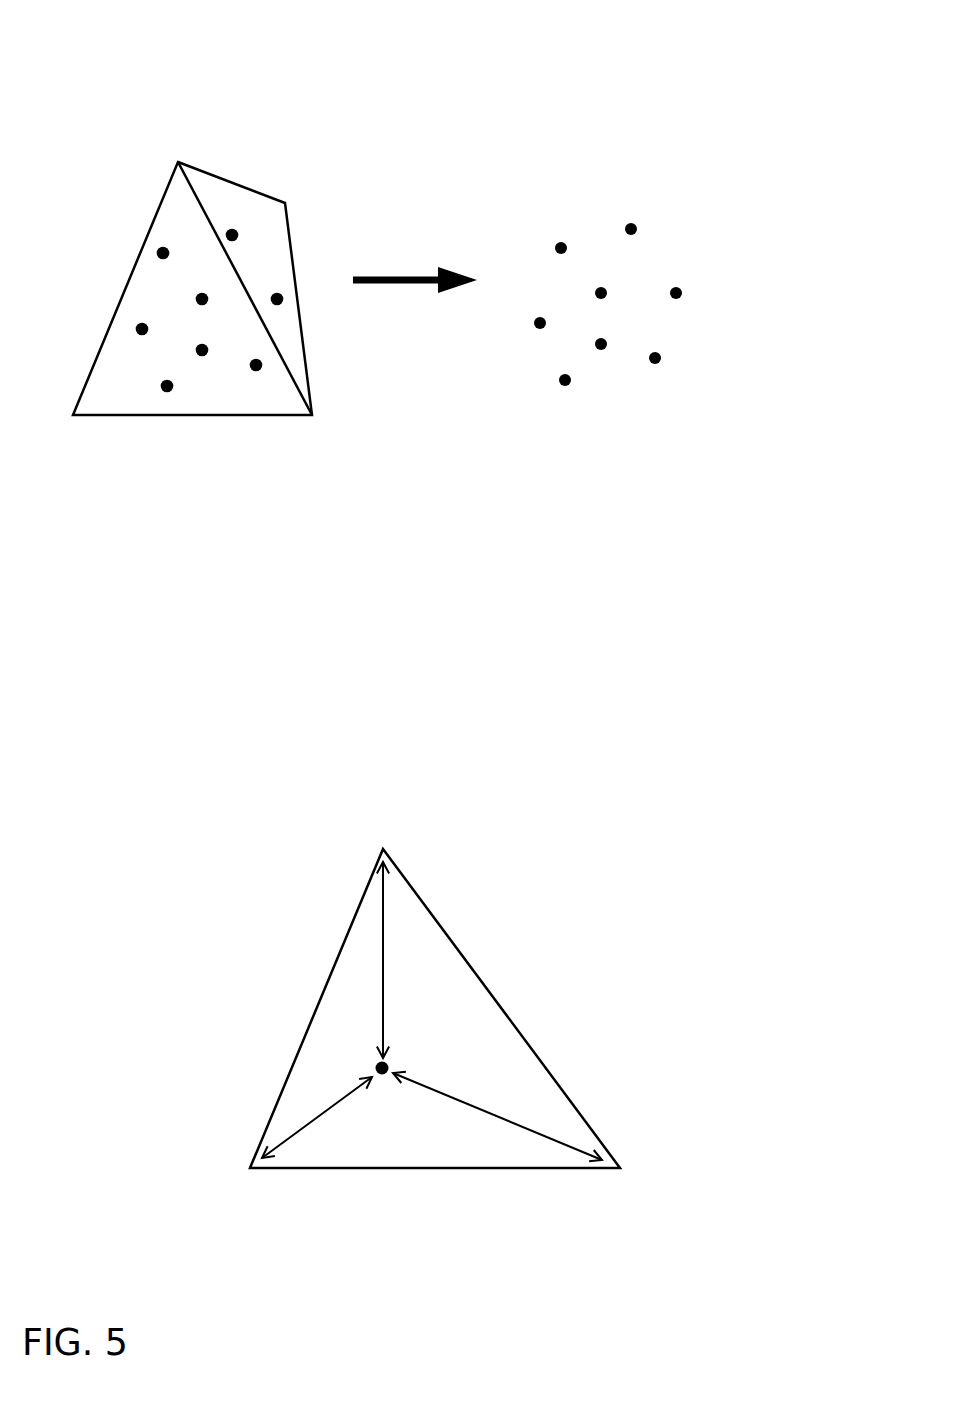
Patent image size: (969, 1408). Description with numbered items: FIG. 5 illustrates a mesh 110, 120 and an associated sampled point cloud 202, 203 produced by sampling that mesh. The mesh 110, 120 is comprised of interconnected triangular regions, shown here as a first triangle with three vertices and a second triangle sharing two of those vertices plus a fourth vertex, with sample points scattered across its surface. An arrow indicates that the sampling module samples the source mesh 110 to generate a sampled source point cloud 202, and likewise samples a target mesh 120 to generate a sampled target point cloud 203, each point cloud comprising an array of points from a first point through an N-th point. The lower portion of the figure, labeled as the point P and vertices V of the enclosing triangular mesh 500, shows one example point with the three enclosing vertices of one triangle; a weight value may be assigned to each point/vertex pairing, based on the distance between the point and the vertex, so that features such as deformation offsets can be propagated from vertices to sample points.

The source 3D mesh 110 is at (190, 229).
The target 3D mesh 120 is at (190, 229).
The sampled source point cloud 202 is at (618, 220).
The sampled target point cloud 203 is at (618, 220).
The point P and vertices V of enclosing triangular mesh 500 is at (398, 951).